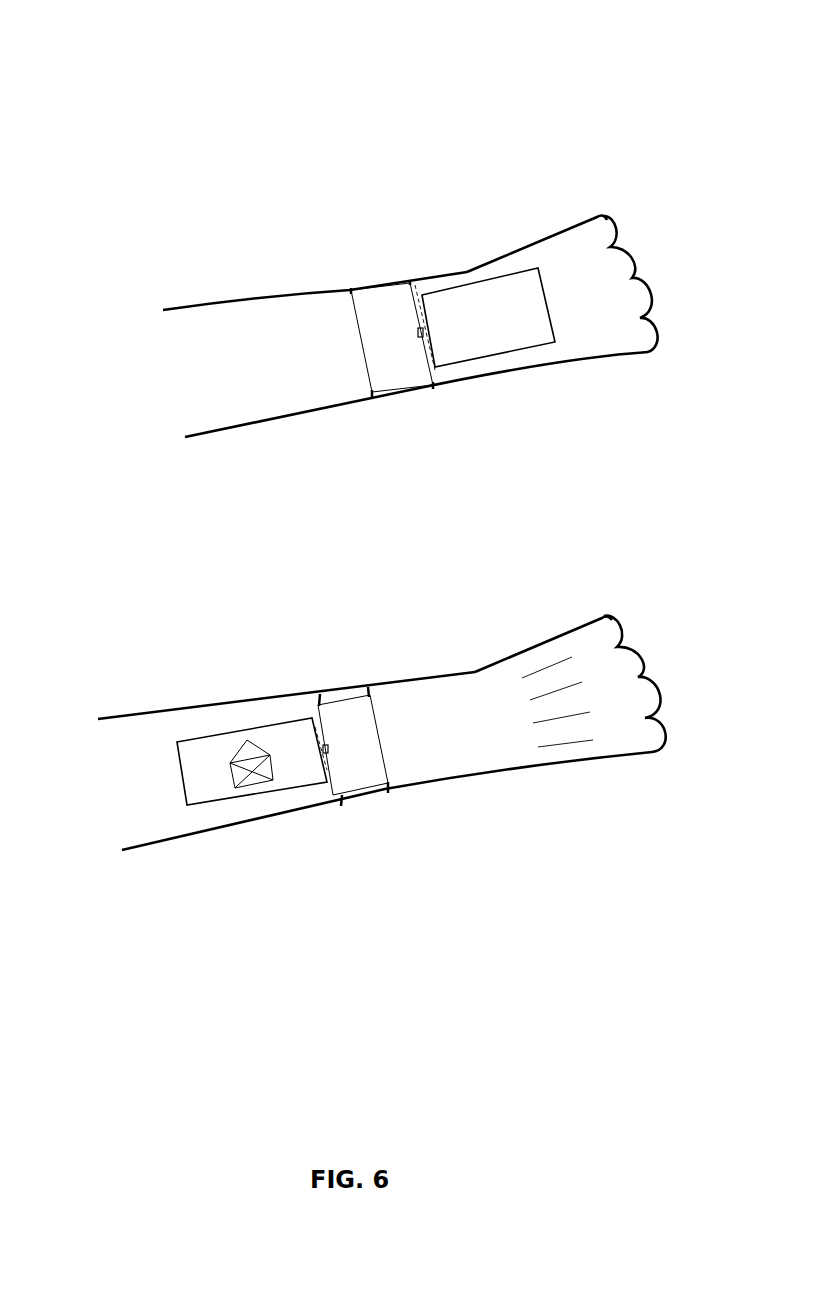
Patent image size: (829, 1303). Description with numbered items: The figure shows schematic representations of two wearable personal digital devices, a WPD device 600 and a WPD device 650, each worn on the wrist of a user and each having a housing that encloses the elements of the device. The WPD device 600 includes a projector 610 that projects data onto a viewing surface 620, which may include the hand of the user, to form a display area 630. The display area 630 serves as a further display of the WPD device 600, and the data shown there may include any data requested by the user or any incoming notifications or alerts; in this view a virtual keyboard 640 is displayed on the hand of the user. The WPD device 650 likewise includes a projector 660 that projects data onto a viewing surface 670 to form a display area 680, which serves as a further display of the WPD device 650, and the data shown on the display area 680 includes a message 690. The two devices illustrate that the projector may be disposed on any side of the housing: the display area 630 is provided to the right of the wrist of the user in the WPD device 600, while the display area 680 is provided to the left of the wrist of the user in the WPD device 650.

The WPD device 600 is at (718, 68).
The projector 610 is at (418, 327).
The viewing surface 620 is at (530, 262).
The display area 630 is at (482, 277).
The virtual keyboard 640 is at (490, 343).
The WPD device 650 is at (776, 600).
The projector 660 is at (323, 745).
The viewing surface 670 is at (152, 738).
The display area 680 is at (210, 735).
The message 690 is at (258, 776).